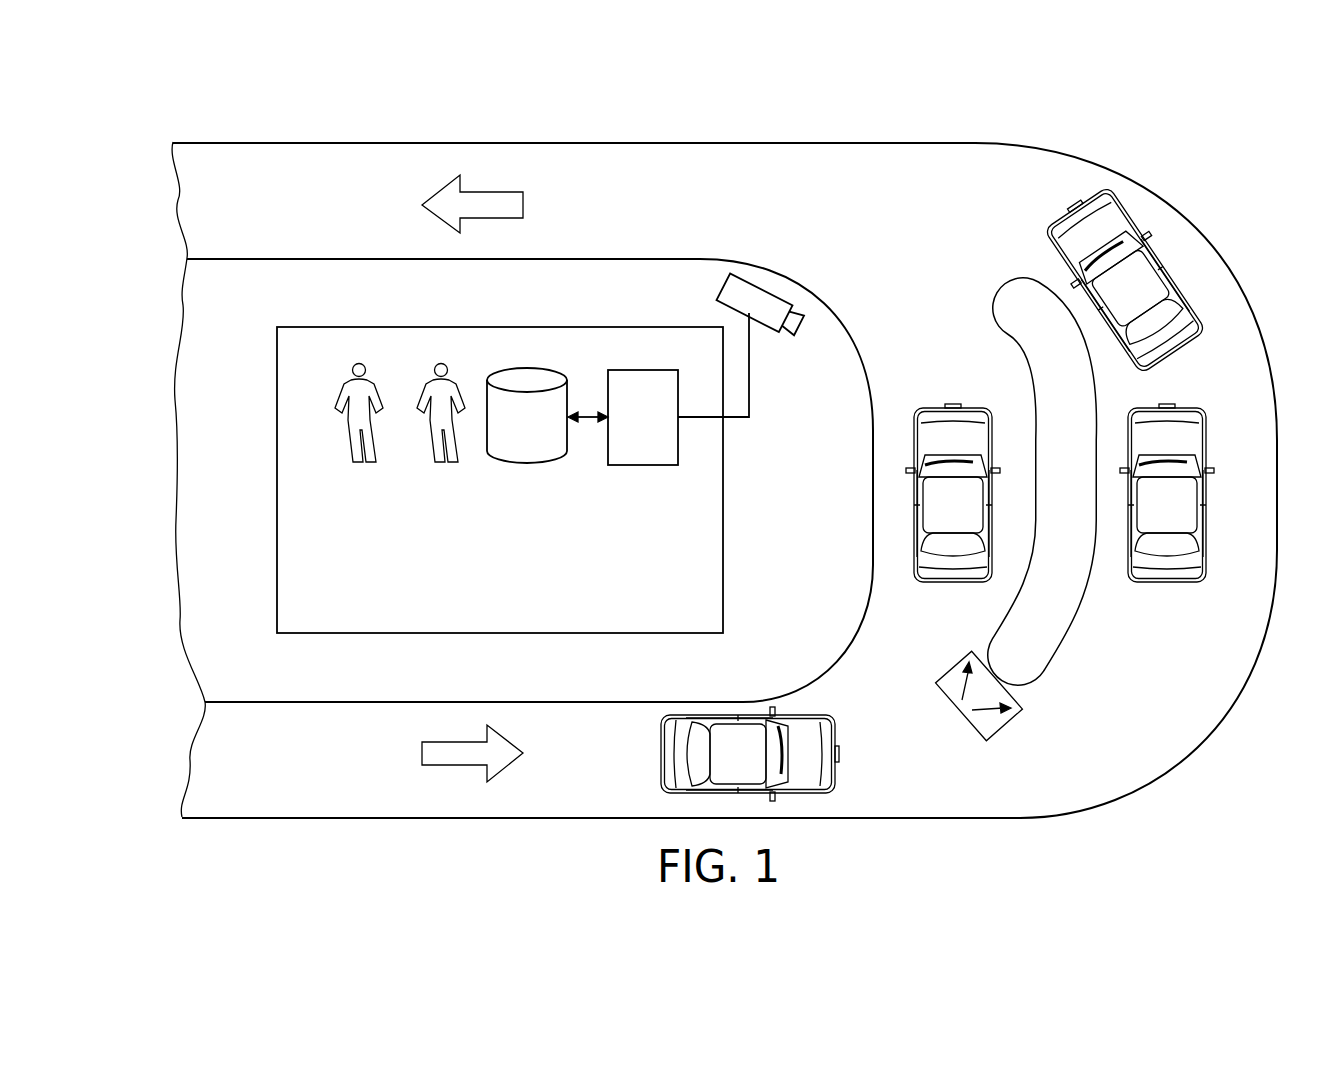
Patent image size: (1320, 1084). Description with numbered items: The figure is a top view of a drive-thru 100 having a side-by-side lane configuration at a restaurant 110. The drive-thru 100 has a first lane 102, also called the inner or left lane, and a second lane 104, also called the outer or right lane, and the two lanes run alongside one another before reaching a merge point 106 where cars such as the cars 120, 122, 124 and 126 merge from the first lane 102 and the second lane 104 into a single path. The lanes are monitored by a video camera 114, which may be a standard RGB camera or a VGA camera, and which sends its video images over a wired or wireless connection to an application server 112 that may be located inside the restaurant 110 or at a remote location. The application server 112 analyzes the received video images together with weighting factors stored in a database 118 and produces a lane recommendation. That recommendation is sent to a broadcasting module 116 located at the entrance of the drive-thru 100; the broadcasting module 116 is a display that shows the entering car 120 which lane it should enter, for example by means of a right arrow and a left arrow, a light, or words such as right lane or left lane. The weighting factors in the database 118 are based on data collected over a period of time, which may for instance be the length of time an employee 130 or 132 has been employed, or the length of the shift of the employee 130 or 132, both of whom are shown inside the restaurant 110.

The drive-thru 100 is at (1128, 172).
The first lane 102 is at (878, 618).
The second lane 104 is at (1215, 678).
The merge point 106 is at (868, 170).
The restaurant 110 is at (288, 482).
The application server 112 is at (608, 445).
The video camera 114 is at (762, 288).
The broadcasting module 116 is at (1003, 728).
The database 118 is at (508, 468).
The entering car 120 is at (661, 737).
The car 122 is at (950, 405).
The car 124 is at (1068, 222).
The car 126 is at (1207, 497).
The employee 130 is at (366, 378).
The employee 132 is at (447, 378).